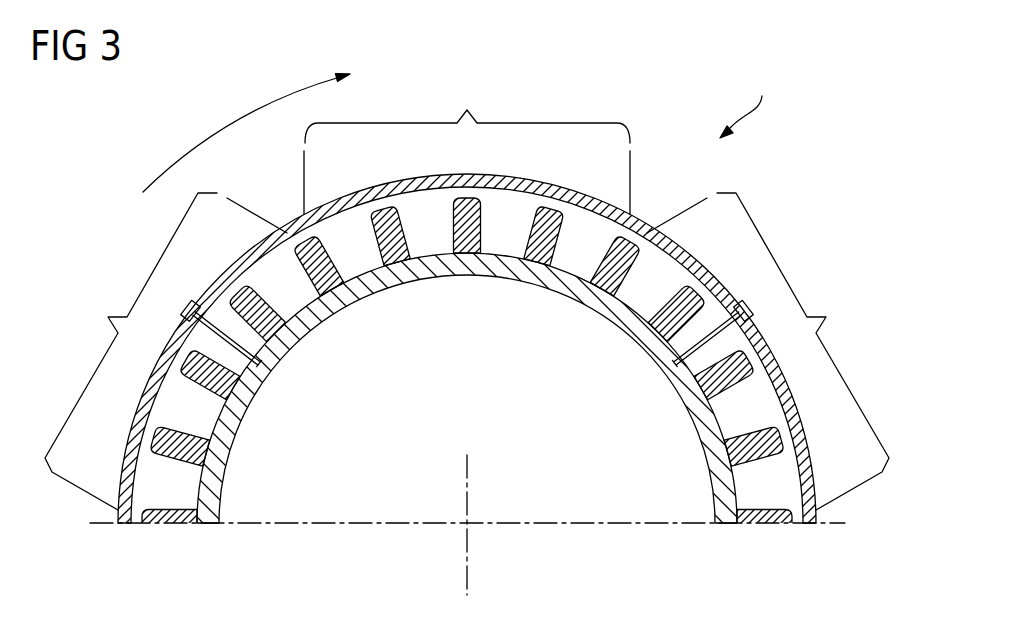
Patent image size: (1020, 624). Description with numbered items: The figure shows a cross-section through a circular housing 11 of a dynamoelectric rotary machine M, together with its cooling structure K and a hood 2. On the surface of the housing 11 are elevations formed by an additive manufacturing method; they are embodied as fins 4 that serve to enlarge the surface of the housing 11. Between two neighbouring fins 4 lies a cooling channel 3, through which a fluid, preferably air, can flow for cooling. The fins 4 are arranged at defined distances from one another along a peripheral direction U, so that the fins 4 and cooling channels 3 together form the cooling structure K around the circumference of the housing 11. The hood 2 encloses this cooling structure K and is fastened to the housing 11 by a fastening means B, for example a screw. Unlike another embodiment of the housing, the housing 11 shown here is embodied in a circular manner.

The hood 2 is at (641, 222).
The cooling channel 3 is at (762, 410).
The fins 4 is at (698, 283).
The circular housing 11 is at (725, 522).
The fastening means B is at (217, 322).
The cooling structure K is at (467, 294).
The peripheral direction U is at (218, 128).
The dynamoelectric rotary machine M is at (746, 103).